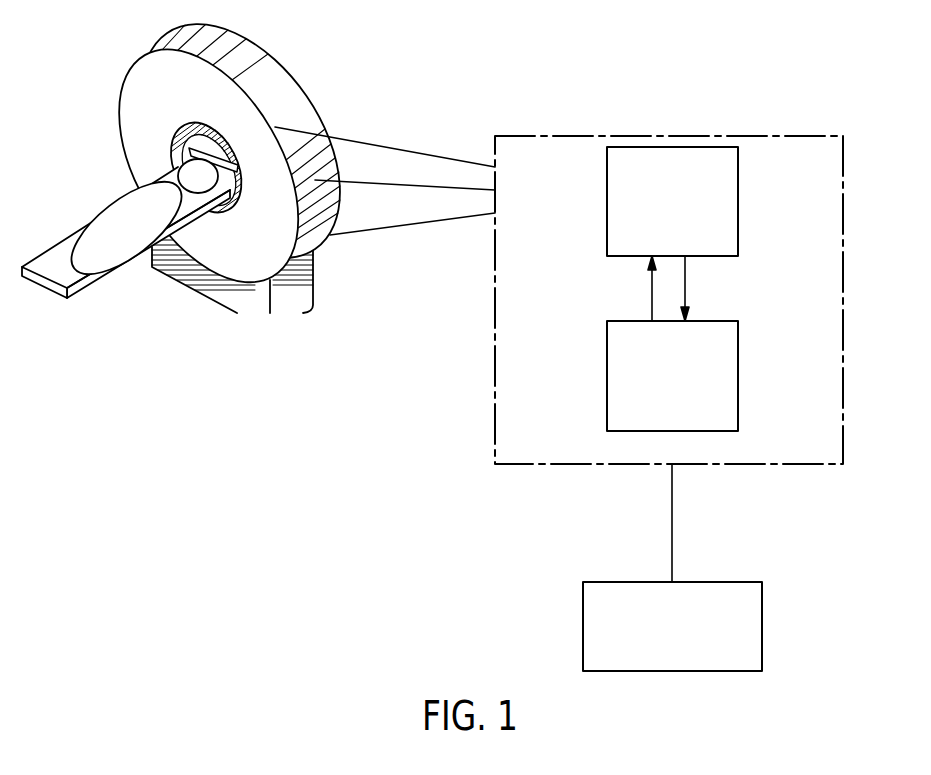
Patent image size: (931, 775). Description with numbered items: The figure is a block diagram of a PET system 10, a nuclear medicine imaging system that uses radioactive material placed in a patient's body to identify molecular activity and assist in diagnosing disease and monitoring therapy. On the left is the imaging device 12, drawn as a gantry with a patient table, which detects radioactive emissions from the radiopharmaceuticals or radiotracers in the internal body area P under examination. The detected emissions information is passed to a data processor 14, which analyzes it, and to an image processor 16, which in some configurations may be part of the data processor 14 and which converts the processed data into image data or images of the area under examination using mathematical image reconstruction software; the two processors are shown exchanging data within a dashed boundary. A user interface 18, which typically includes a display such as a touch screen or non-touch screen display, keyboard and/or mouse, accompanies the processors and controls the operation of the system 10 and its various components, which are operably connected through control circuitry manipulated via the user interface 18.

The PET system 10 is at (206, 374).
The imaging device 12 is at (277, 82).
The data processor 14 is at (663, 212).
The image processor 16 is at (663, 390).
The user interface 18 is at (663, 640).
The internal body area P is at (103, 228).